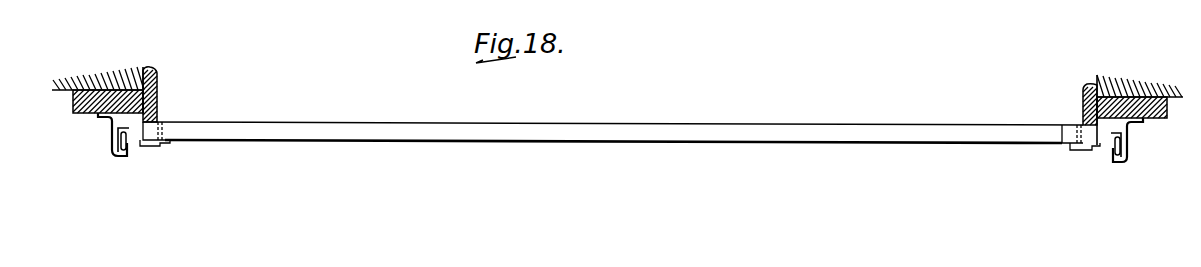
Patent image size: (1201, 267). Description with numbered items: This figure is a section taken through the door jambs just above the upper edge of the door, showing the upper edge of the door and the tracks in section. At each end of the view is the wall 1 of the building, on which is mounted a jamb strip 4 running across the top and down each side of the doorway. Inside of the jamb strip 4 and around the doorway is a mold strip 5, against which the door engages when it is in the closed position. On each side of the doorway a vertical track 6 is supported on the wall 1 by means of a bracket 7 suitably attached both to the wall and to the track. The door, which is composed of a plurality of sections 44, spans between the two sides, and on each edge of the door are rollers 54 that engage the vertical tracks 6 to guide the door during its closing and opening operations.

The wall 1 is at (106, 88).
The jamb strip 4 is at (73, 116).
The mold strip 5 is at (151, 91).
The vertical track 6 is at (124, 158).
The bracket 7 is at (110, 143).
The door section 44 is at (653, 127).
The roller 54 is at (128, 148).